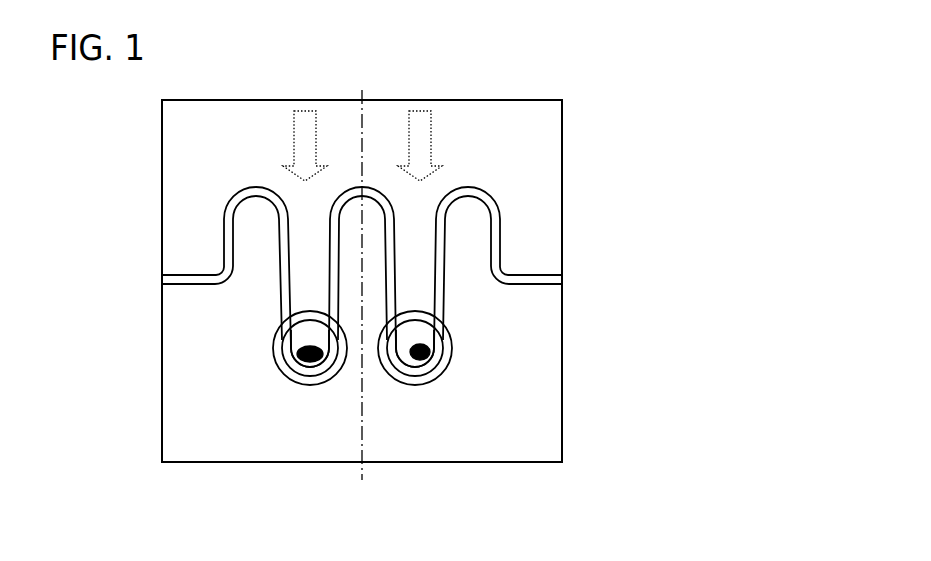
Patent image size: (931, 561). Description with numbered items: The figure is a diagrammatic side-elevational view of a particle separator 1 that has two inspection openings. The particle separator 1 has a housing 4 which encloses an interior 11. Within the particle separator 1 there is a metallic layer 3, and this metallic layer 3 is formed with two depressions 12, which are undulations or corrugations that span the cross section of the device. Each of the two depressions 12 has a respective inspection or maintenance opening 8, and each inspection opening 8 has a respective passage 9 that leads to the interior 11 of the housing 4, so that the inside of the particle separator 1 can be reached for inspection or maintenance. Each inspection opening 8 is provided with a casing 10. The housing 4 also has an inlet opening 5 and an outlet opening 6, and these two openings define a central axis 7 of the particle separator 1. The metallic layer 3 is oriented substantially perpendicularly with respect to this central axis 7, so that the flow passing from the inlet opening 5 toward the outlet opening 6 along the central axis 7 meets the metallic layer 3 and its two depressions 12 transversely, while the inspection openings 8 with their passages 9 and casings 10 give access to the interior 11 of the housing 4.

The particle separator 1 is at (606, 101).
The metallic layer 3 is at (555, 274).
The housing 4 is at (170, 142).
The inlet opening 5 is at (525, 99).
The outlet opening 6 is at (192, 462).
The central axis 7 is at (363, 425).
The inspection opening 8 is at (273, 340).
The passage 9 is at (286, 369).
The casing 10 is at (382, 370).
The interior 11 is at (232, 137).
The depression 12 is at (417, 377).